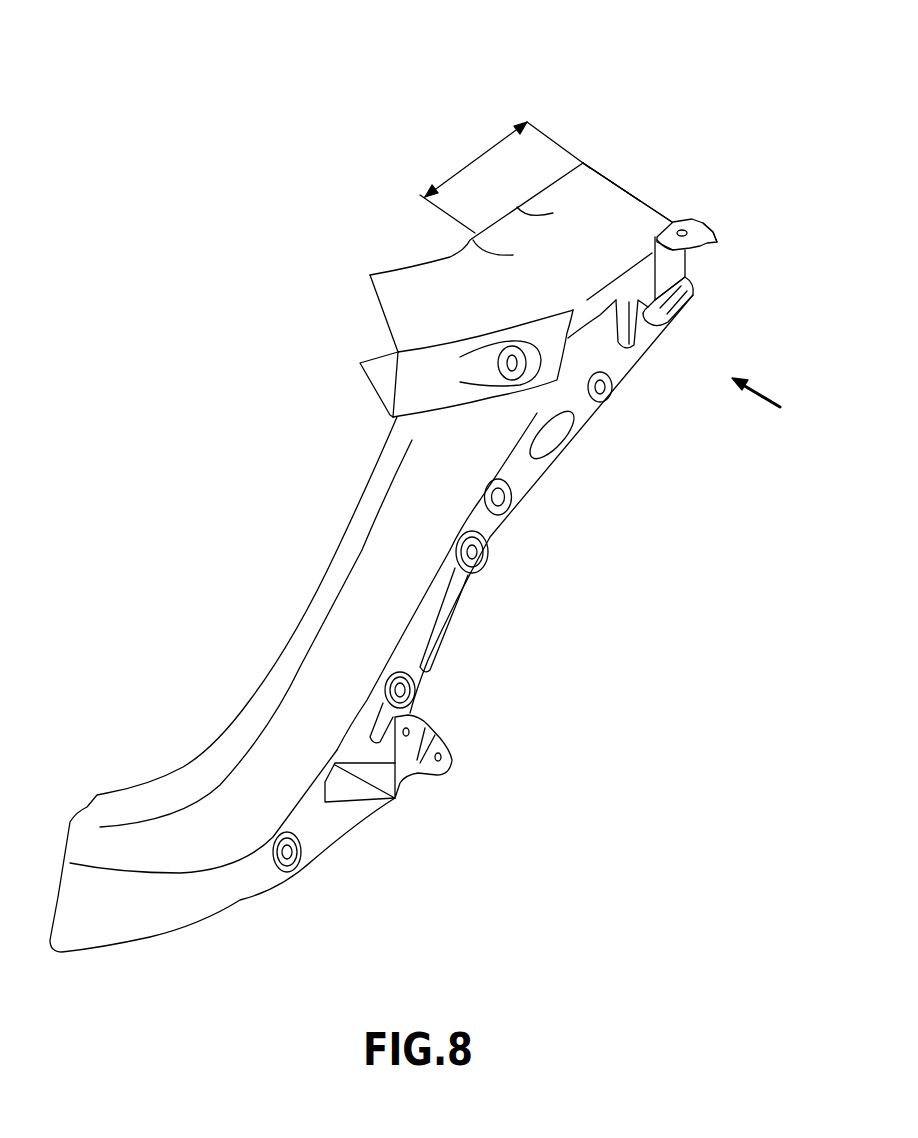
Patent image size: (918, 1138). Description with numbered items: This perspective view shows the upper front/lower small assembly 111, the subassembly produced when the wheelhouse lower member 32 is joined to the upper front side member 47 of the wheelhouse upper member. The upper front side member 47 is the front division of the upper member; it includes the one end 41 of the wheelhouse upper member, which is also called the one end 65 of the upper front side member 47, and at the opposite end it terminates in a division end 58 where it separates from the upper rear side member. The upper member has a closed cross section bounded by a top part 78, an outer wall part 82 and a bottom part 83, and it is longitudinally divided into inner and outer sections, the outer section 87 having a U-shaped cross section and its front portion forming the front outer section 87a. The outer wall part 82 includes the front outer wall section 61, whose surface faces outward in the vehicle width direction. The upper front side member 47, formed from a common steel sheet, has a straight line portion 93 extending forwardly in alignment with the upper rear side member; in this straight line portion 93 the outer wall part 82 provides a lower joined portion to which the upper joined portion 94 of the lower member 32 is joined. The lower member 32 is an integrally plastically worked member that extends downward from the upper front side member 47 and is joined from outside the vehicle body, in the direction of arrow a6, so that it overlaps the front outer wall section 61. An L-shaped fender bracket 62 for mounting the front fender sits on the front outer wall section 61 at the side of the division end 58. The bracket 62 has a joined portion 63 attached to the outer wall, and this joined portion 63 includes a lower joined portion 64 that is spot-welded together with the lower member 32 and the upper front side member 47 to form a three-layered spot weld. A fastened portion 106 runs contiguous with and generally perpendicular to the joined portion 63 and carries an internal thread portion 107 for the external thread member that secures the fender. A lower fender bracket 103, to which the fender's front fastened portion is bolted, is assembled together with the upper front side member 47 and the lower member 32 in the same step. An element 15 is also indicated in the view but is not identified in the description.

The front pillar structure 15 is at (378, 104).
The wheelhouse lower member 32 is at (232, 689).
The one end of the wheelhouse upper member 41 is at (476, 253).
The one end of the upper front side member 65 is at (398, 300).
The upper front side member 47 is at (520, 194).
The division end 58 is at (613, 207).
The fender bracket 62 is at (705, 200).
The joined portion 63 is at (688, 255).
The lower joined portion 64 is at (694, 285).
The top part 78 is at (470, 290).
The bottom part 83 is at (380, 382).
The outer section 87 is at (581, 136).
The straight line portion 93 is at (478, 158).
The upper joined portion 94 is at (640, 307).
The lower fender bracket 103 is at (415, 785).
The fastened portion 106 is at (710, 220).
The internal thread portion 107 is at (683, 230).
The upper front/lower small assembly 111 is at (202, 291).
The front outer wall section 61 is at (552, 522).
The outer wall part 82 is at (552, 522).
The front outer section 87a is at (625, 300).
The direction arrow a6 is at (758, 386).